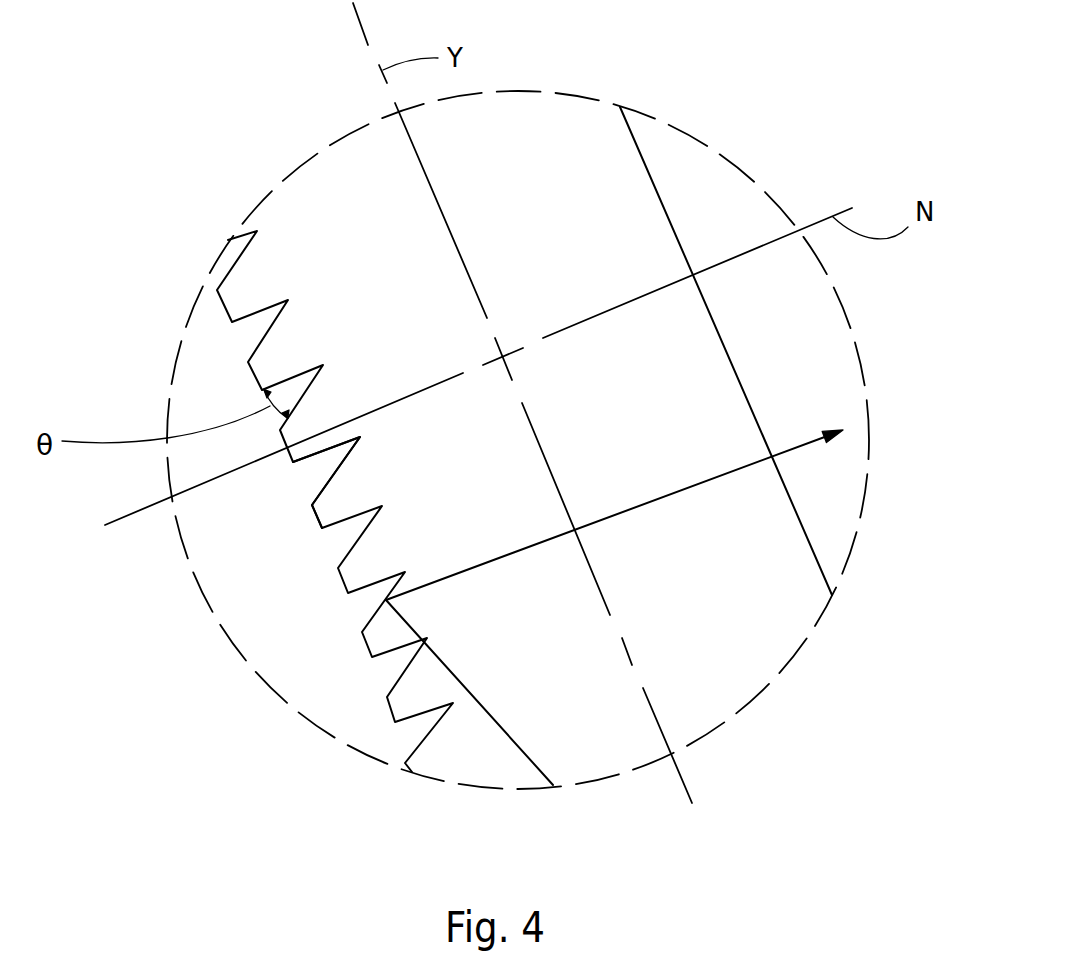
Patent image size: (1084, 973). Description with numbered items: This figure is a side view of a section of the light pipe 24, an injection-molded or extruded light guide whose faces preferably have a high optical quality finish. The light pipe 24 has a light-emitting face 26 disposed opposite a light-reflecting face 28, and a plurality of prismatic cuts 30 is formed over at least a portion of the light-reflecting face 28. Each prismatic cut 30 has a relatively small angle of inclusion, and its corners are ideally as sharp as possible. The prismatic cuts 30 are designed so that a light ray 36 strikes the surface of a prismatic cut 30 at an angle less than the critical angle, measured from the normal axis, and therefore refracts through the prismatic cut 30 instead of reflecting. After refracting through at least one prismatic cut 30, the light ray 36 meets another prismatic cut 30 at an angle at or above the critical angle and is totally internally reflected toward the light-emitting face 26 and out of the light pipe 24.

The light pipe 24 is at (285, 112).
The light-emitting face 26 is at (665, 210).
The light-reflecting face 28 is at (362, 651).
The prismatic cut 30 is at (336, 471).
The light ray 36 is at (788, 449).